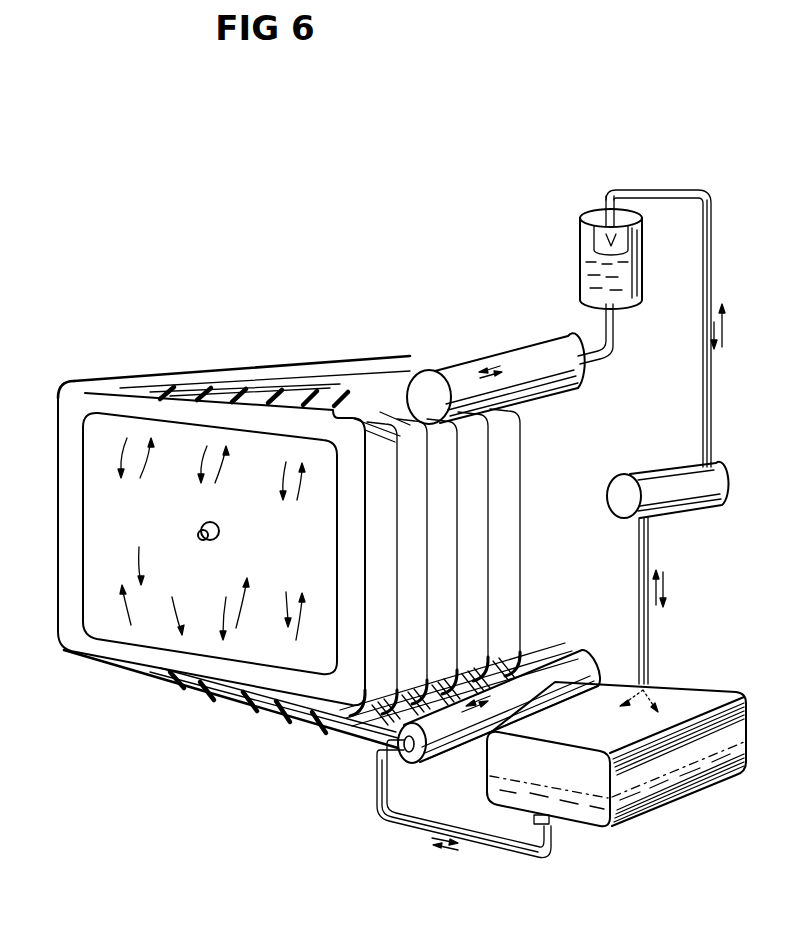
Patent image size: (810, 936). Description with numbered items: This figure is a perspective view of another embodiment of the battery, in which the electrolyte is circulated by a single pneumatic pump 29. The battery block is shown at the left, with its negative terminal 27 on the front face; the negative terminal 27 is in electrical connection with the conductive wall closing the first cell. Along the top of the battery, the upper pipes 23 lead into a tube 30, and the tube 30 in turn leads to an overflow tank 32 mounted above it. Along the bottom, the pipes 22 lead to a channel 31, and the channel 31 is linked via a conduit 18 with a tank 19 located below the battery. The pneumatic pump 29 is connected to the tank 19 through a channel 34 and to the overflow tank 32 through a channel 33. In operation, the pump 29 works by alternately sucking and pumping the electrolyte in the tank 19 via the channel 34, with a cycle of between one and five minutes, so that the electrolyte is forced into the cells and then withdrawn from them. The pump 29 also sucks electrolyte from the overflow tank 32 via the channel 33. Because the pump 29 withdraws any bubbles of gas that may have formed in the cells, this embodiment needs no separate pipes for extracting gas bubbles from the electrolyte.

The conduit 18 is at (500, 846).
The tank 19 is at (662, 805).
The pipes 22 is at (362, 752).
The upper pipes 23 is at (422, 370).
The negative terminal 27 is at (195, 526).
The pneumatic pump 29 is at (660, 480).
The tube 30 is at (523, 360).
The channel 31 is at (577, 657).
The overflow tank 32 is at (578, 246).
The channel 33 is at (698, 336).
The channel 34 is at (650, 544).